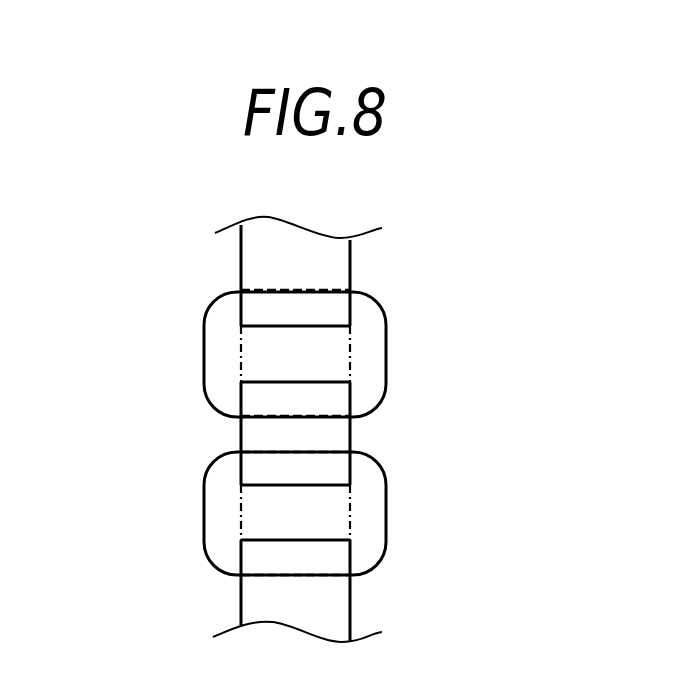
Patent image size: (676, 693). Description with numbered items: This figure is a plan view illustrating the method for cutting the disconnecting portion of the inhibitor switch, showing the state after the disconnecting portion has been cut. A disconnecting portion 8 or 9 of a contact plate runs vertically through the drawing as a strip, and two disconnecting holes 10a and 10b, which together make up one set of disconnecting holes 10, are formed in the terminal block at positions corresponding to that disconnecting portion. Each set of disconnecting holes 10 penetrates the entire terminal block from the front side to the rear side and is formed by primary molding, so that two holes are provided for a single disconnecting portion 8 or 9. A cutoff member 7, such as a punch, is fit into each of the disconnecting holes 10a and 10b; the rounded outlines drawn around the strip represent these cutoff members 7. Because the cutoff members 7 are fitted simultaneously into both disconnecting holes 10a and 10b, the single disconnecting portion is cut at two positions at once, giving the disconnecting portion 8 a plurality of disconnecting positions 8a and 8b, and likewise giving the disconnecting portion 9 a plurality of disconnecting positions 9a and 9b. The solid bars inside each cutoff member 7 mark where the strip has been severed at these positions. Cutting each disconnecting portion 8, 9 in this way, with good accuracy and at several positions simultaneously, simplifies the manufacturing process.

The cutoff member 7 is at (350, 352).
The disconnecting portion 8 is at (241, 252).
The disconnecting portion 9 is at (260, 439).
The disconnecting position 8a is at (230, 355).
The disconnecting position 9a is at (233, 371).
The disconnecting position 8b is at (232, 519).
The disconnecting position 9b is at (233, 530).
The disconnecting hole 10a is at (358, 392).
The disconnecting hole 10b is at (361, 513).
The disconnecting holes 10 is at (396, 432).